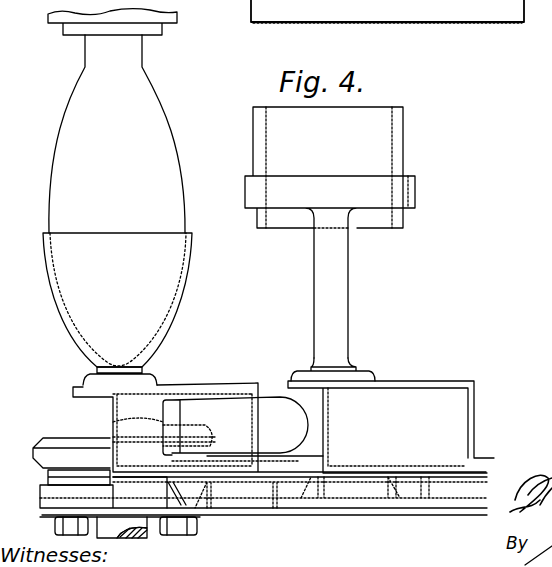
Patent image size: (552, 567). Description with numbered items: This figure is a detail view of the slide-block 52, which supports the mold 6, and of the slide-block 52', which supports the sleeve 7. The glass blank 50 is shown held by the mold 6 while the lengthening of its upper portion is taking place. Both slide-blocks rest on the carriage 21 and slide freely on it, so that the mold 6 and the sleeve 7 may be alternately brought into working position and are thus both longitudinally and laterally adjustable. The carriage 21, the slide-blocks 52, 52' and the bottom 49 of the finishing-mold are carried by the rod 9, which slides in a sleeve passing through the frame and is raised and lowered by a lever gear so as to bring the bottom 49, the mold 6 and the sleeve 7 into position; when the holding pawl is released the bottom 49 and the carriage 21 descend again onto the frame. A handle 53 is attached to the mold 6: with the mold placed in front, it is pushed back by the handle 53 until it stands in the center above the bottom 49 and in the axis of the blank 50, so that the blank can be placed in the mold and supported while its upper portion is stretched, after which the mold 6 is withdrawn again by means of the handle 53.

The sleeve 7 is at (398, 127).
The blank 50 is at (117, 187).
The mold 6 is at (50, 277).
The slide-block 52 is at (279, 414).
The handle 53 is at (269, 392).
The slide-block 52' is at (391, 412).
The bottom of the finishing-mold 49 is at (90, 435).
The rod 9 is at (114, 526).
The carriage 21 is at (346, 506).